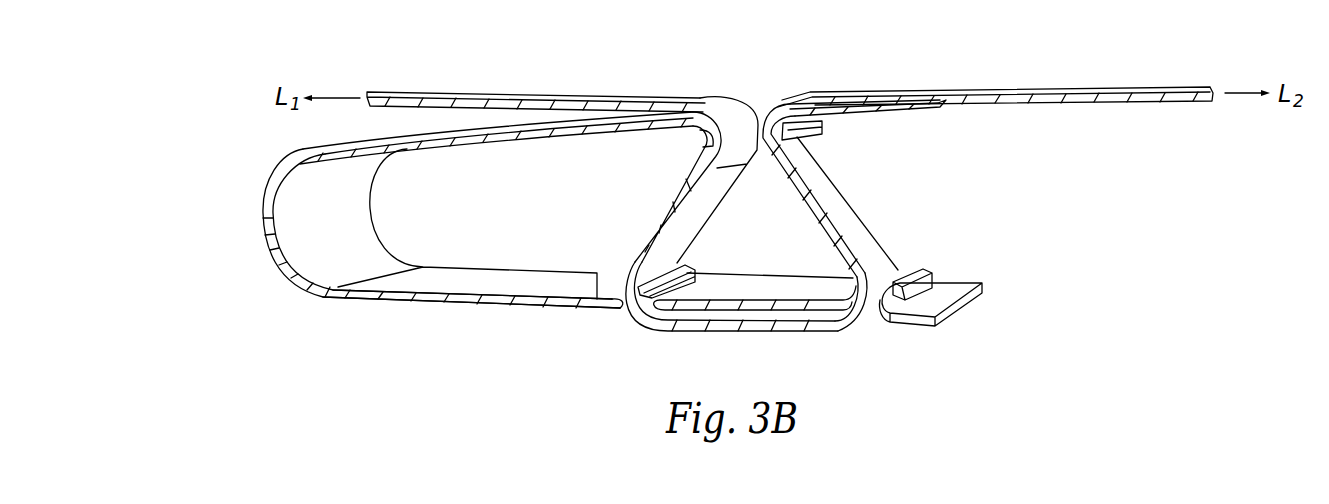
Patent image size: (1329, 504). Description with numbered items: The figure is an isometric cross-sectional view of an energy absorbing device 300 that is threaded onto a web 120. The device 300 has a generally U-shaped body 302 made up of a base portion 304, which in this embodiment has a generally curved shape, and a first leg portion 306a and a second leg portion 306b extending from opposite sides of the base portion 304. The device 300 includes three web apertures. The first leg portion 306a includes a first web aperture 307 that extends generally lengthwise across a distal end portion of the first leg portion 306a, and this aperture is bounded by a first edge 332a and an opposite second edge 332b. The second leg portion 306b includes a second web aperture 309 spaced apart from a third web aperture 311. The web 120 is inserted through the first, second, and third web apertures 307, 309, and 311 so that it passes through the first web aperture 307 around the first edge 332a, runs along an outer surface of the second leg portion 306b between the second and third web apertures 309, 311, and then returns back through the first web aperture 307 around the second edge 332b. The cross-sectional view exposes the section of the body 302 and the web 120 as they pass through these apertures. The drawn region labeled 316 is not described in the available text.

The web 120 is at (1063, 88).
The energy absorbing device 300 is at (279, 164).
The U-shaped body 302 is at (271, 208).
The base portion 304 is at (282, 256).
The first leg portion 306a is at (520, 132).
The second leg portion 306b is at (467, 300).
The first web aperture 307 is at (738, 90).
The second web aperture 309 is at (615, 315).
The third web aperture 311 is at (896, 326).
The arm end 316 is at (897, 113).
The first edge 332a is at (682, 112).
The second edge 332b is at (772, 115).